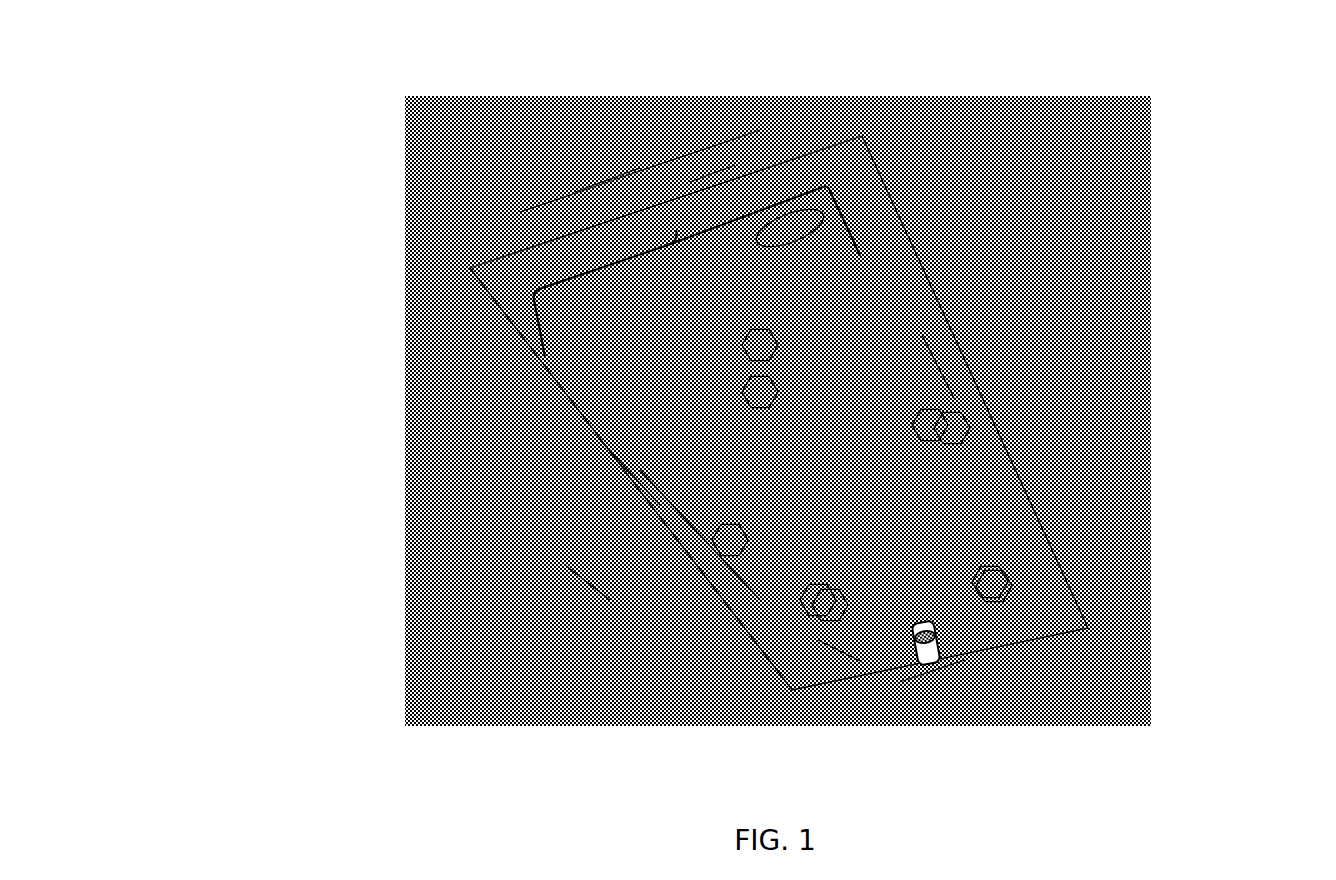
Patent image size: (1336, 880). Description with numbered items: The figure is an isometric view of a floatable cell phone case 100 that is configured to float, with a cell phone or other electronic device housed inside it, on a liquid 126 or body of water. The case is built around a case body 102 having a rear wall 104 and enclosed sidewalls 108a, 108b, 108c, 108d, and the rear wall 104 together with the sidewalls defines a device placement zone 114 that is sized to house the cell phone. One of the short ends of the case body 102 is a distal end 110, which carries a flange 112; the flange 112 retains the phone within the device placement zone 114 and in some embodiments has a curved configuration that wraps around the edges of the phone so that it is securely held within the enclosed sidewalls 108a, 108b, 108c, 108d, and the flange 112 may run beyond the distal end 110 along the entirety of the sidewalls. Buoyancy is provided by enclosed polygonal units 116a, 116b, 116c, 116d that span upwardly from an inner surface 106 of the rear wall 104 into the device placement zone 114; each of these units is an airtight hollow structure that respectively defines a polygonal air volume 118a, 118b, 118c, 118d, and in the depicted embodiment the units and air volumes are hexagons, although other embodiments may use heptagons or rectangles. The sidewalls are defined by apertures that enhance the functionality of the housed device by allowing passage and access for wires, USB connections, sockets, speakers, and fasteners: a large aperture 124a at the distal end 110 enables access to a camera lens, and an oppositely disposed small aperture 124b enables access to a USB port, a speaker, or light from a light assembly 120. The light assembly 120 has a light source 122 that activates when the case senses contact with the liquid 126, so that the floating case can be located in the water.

The floatable cell phone case 100 is at (290, 232).
The case body 102 is at (450, 457).
The rear wall 104 is at (528, 207).
The inner surface 106 is at (688, 527).
The enclosed sidewall 108a is at (707, 173).
The enclosed sidewall 108b is at (935, 345).
The enclosed sidewall 108c is at (837, 647).
The enclosed sidewall 108d is at (630, 462).
The distal end 110 is at (582, 183).
The flange 112 is at (850, 197).
The device placement zone 114 is at (676, 230).
The enclosed polygonal unit 116a is at (775, 385).
The enclosed polygonal unit 116b is at (960, 420).
The enclosed polygonal unit 116c is at (1005, 580).
The enclosed polygonal unit 116d is at (835, 622).
The polygonal air volume 118a is at (768, 333).
The polygonal air volume 118b is at (940, 415).
The polygonal air volume 118c is at (1000, 572).
The polygonal air volume 118d is at (808, 613).
The light assembly 120 is at (945, 668).
The light source 122 is at (942, 643).
The large aperture 124a is at (788, 225).
The small aperture 124b is at (918, 666).
The liquid 126 is at (528, 557).